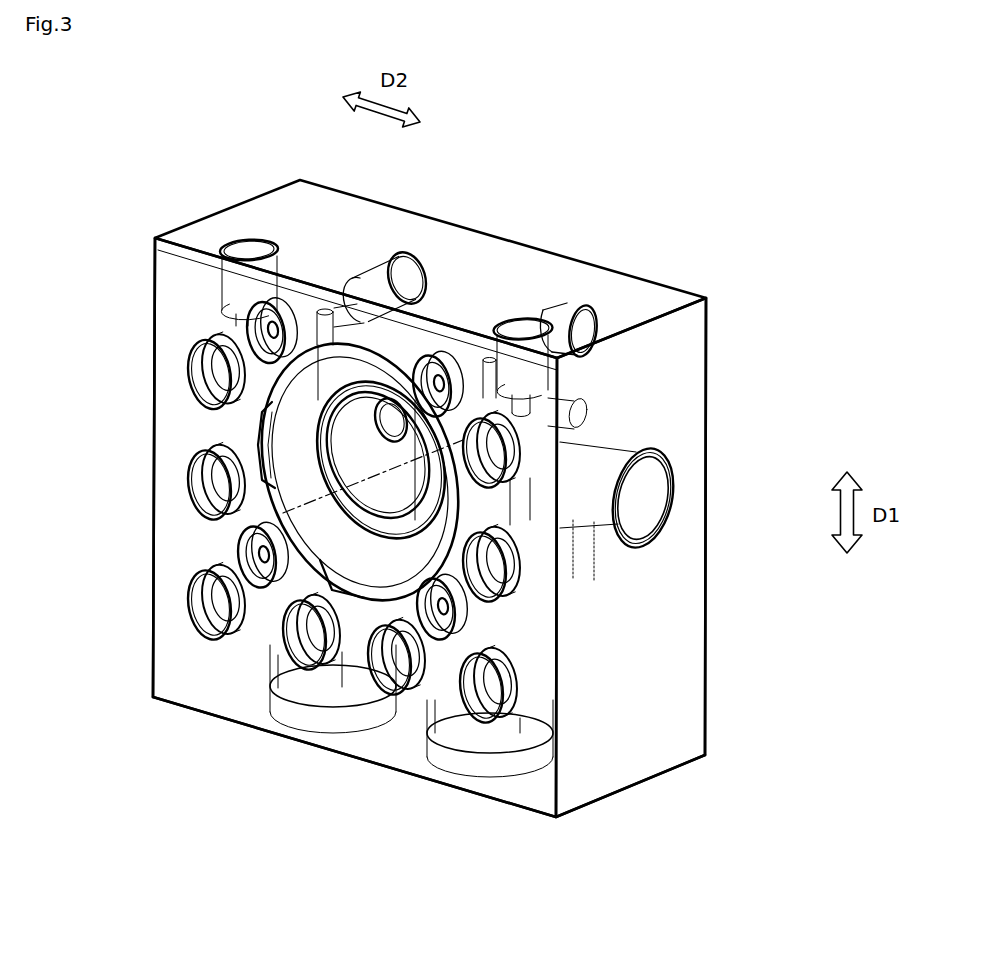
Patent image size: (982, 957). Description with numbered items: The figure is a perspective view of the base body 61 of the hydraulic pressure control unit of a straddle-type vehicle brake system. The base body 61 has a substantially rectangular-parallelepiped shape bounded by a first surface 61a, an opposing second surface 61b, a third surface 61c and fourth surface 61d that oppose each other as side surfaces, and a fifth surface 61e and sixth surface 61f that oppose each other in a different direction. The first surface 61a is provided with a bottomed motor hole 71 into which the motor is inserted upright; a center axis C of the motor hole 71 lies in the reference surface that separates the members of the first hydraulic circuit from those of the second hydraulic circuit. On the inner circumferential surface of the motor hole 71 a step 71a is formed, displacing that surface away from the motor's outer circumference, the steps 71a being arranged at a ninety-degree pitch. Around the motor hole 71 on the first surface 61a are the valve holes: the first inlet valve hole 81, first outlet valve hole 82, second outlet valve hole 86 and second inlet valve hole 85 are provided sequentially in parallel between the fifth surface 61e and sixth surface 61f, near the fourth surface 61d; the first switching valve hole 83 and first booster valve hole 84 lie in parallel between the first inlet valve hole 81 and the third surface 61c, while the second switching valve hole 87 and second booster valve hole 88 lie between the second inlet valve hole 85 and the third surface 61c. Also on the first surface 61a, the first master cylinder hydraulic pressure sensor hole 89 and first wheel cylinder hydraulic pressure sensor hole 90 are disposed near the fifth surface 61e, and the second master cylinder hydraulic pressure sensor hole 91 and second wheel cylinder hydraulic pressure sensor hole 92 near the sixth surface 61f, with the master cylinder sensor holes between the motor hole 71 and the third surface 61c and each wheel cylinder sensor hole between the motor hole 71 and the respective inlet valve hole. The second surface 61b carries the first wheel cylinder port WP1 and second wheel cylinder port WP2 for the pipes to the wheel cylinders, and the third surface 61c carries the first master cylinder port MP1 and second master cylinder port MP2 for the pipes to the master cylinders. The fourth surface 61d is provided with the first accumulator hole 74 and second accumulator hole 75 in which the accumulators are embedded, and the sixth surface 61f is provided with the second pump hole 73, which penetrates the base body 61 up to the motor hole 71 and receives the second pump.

The base body 61 is at (432, 519).
The first surface 61a is at (172, 262).
The second surface 61b is at (716, 322).
The third surface 61c is at (620, 298).
The fourth surface 61d is at (610, 797).
The fifth surface 61e is at (153, 348).
The sixth surface 61f is at (684, 362).
The motor hole 71 is at (273, 404).
The step 71a is at (272, 441).
The second pump hole 73 is at (655, 487).
The first accumulator hole 74 is at (334, 736).
The second accumulator hole 75 is at (521, 780).
The first inlet valve hole 81 is at (233, 622).
The first outlet valve hole 82 is at (312, 645).
The first switching valve hole 83 is at (225, 481).
The first booster valve hole 84 is at (220, 368).
The second inlet valve hole 85 is at (493, 690).
The second outlet valve hole 86 is at (410, 665).
The second switching valve hole 87 is at (505, 578).
The second booster valve hole 88 is at (495, 460).
The first master cylinder hydraulic pressure sensor hole 89 is at (262, 320).
The first wheel cylinder hydraulic pressure sensor hole 90 is at (260, 562).
The second master cylinder hydraulic pressure sensor hole 91 is at (458, 398).
The second wheel cylinder hydraulic pressure sensor hole 92 is at (463, 620).
The first master cylinder port MP1 is at (253, 250).
The second master cylinder port MP2 is at (530, 333).
The first wheel cylinder port WP1 is at (423, 274).
The second wheel cylinder port WP2 is at (587, 315).
The center axis C is at (380, 261).